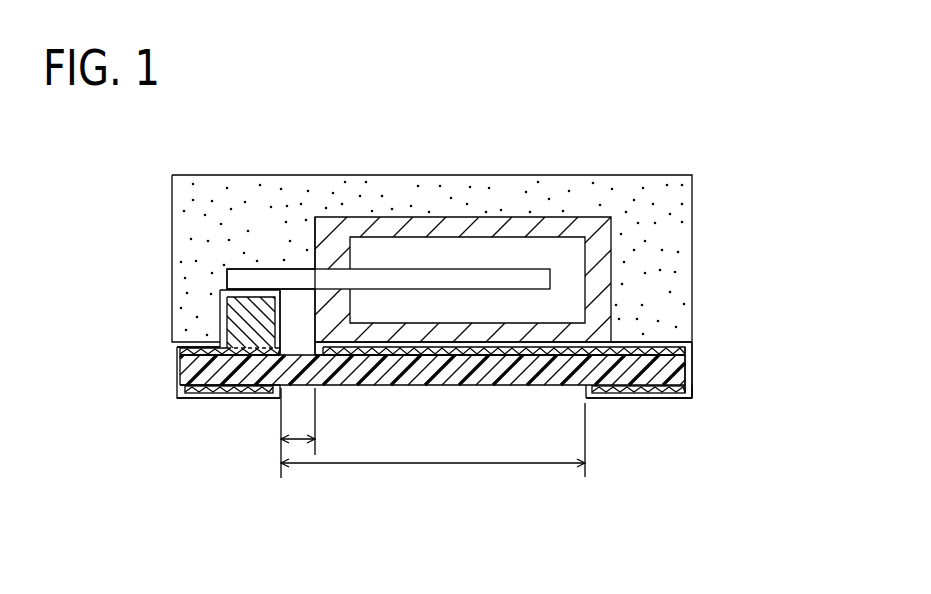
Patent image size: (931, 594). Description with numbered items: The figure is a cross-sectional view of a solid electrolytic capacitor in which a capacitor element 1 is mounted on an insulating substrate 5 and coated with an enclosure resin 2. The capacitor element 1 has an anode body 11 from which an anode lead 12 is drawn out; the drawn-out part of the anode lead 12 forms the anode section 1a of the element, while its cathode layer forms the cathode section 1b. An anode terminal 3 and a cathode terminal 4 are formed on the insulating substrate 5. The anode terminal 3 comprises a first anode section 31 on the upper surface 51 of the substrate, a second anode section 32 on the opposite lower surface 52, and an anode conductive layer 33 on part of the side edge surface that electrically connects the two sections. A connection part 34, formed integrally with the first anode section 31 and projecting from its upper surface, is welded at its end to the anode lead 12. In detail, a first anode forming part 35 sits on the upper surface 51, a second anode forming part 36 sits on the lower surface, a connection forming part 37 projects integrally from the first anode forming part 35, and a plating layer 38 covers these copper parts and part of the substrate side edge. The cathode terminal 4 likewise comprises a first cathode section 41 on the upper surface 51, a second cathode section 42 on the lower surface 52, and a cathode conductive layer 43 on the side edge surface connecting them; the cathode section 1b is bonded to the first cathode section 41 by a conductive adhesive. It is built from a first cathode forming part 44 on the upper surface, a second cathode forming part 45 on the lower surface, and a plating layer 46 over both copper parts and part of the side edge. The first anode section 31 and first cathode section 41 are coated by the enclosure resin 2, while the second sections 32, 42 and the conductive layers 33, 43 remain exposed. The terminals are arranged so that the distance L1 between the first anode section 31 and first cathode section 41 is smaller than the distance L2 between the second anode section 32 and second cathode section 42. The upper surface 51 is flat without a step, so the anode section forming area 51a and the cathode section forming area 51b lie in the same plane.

The capacitor element 1 is at (530, 213).
The anode section 1a is at (248, 278).
The cathode section 1b is at (490, 343).
The enclosure resin 2 is at (657, 192).
The anode terminal 3 is at (113, 317).
The cathode terminal 4 is at (753, 313).
The insulating substrate 5 is at (437, 377).
The anode body 11 is at (445, 248).
The anode lead 12 is at (378, 277).
The first anode section 31 is at (192, 346).
The second anode section 32 is at (190, 403).
The anode conductive layer 33 is at (170, 373).
The connection part 34 is at (218, 303).
The first anode forming part 35 is at (199, 357).
The second anode forming part 36 is at (217, 390).
The connection forming part 37 is at (268, 303).
The plating layer 38 is at (238, 386).
The first cathode section 41 is at (673, 340).
The second cathode section 42 is at (673, 403).
The cathode conductive layer 43 is at (697, 372).
The first cathode forming part 44 is at (620, 350).
The second cathode forming part 45 is at (638, 387).
The plating layer 46 is at (665, 395).
The upper surface 51 is at (302, 352).
The anode section forming area 51a is at (254, 357).
The cathode section forming area 51b is at (553, 358).
The lower surface 52 is at (367, 386).
The distance between first anode section and first cathode section L1 is at (298, 433).
The distance between second anode section and second cathode section L2 is at (433, 449).